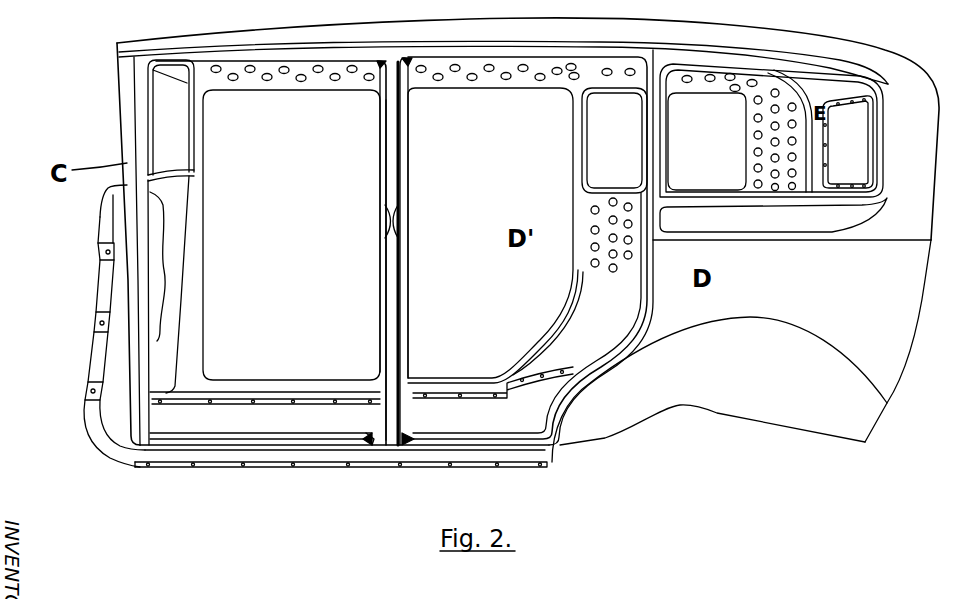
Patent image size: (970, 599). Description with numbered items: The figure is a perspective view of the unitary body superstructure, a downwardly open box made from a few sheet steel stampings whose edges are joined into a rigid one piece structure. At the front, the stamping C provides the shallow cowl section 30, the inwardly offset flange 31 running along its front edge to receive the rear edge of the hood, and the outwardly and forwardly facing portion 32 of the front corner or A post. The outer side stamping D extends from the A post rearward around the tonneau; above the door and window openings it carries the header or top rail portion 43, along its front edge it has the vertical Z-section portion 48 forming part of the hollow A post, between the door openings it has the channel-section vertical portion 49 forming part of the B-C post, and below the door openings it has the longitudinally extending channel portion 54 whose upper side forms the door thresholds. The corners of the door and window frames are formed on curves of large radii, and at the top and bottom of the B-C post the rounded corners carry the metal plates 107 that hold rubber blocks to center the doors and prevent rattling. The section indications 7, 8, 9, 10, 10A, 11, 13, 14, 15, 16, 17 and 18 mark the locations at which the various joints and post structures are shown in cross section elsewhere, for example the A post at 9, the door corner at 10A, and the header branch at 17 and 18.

The vent window frame section 7 is at (182, 153).
The front pillar section 8 is at (157, 133).
The front pillar lower section 9 is at (165, 353).
The sill section 10 is at (268, 483).
The center pillar base section 10A is at (368, 483).
The center pillar section 11 is at (418, 146).
The quarter window section 13 is at (677, 143).
The rear door edge section 14 is at (668, 293).
The rear window section 15 is at (945, 143).
The rear quarter panel section 16 is at (717, 442).
The rear window frame section 17 is at (826, 93).
The roof header section 18 is at (509, 98).
The cowl section 30 is at (120, 227).
The inwardly offset flange 31 is at (106, 284).
The outwardly and forwardly facing portion of the A post 32 is at (127, 385).
The header or top rail portion 43 is at (528, 129).
The vertical portion of Z section 48 is at (142, 395).
The vertical portion of channel cross section 49 is at (390, 296).
The longitudinally extending portion 54 is at (385, 455).
The metal plate 107 is at (406, 66).